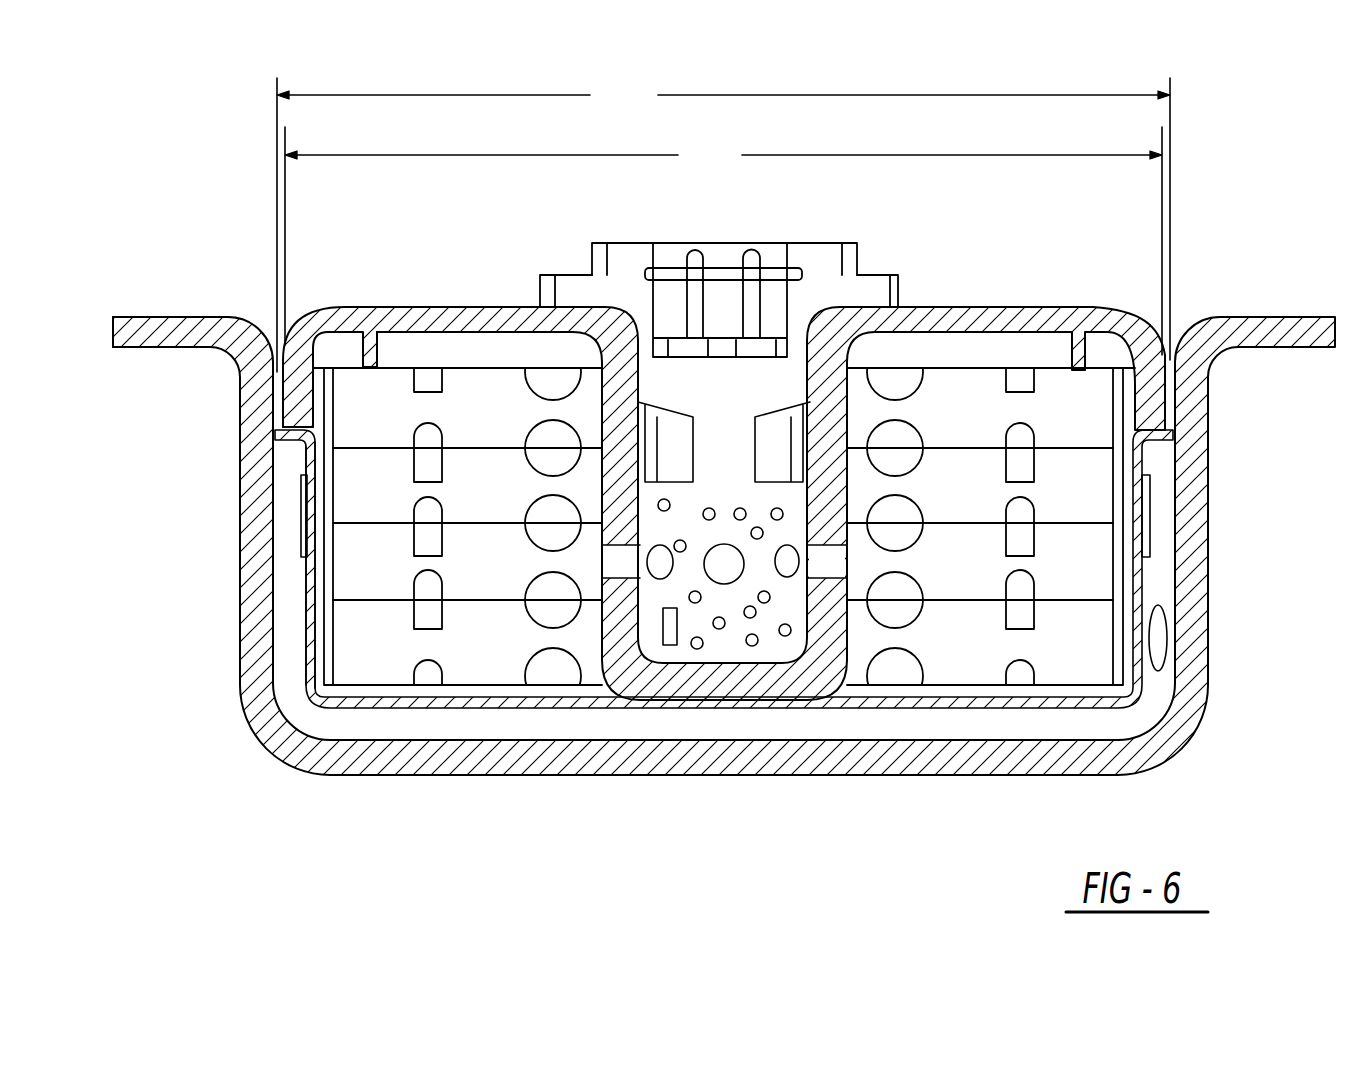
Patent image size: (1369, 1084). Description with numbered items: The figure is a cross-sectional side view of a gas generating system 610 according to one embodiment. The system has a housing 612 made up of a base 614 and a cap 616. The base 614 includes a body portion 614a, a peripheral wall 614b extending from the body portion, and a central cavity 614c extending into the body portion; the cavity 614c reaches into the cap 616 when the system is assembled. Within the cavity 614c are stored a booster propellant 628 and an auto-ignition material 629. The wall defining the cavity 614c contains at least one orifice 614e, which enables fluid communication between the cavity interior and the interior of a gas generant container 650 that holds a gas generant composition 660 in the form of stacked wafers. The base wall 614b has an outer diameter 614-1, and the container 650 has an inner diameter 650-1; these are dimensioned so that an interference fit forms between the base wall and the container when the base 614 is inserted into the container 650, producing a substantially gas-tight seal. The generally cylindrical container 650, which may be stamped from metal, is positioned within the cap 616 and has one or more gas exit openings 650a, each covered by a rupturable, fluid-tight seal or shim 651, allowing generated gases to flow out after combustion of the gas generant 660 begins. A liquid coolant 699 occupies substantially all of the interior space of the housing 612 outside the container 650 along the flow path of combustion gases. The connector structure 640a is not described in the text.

The gas generating system 610 is at (97, 476).
The housing 612 is at (250, 735).
The base 614 is at (372, 297).
The body portion 614a is at (425, 317).
The peripheral wall 614b is at (308, 338).
The central cavity 614c is at (795, 382).
The orifice 614e is at (663, 560).
The outer diameter of base wall 614-1 is at (723, 241).
The cap 616 is at (162, 312).
The booster propellant 628 is at (765, 603).
The auto-ignition material 629 is at (670, 645).
The electrical connector 640a is at (673, 382).
The gas generant container 650 is at (440, 712).
The gas exit opening 650a is at (340, 615).
The inner diameter of gas generant container 650-1 is at (723, 225).
The rupturable fluid-tight seal or shim 651 is at (305, 508).
The gas generant composition 660 is at (373, 653).
The liquid coolant 699 is at (828, 725).